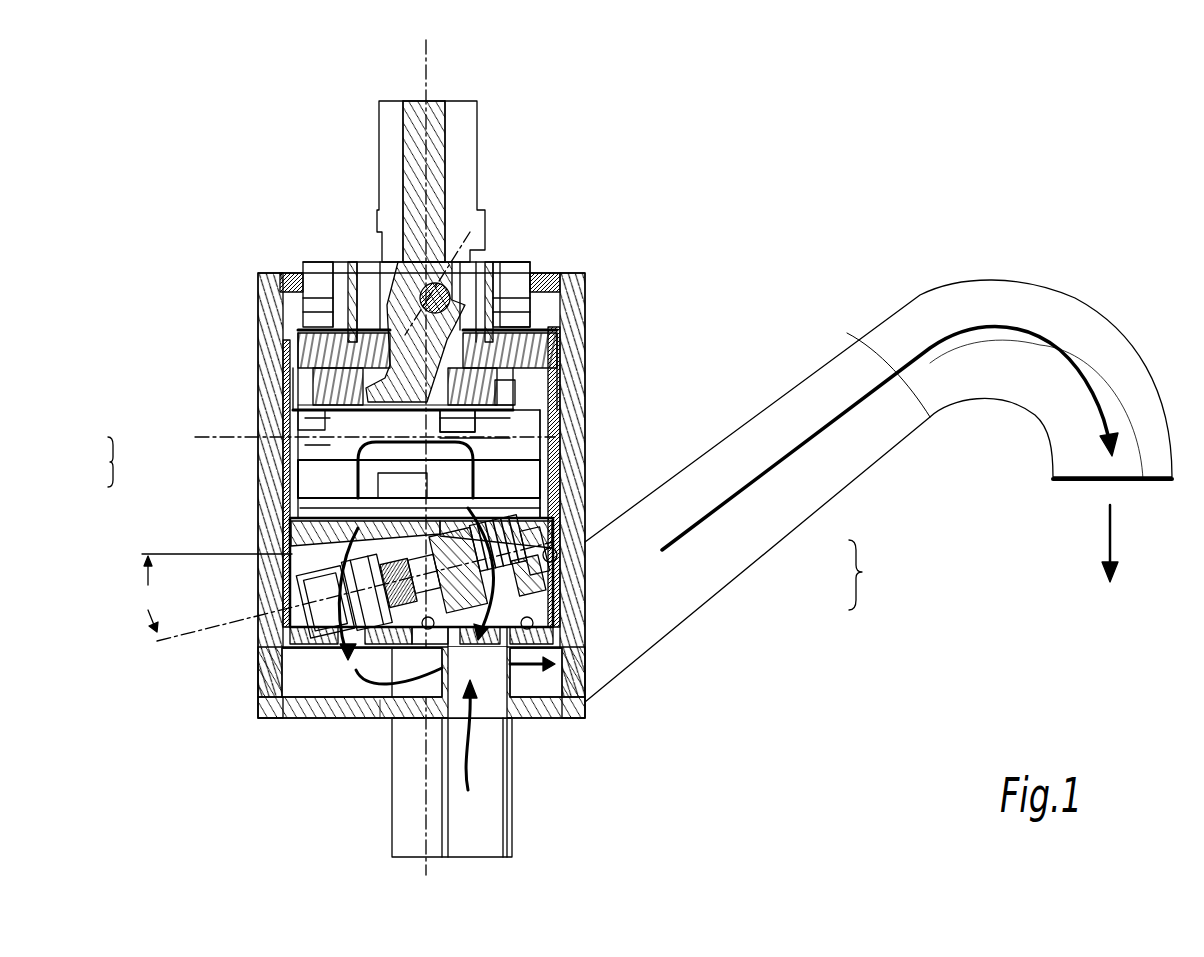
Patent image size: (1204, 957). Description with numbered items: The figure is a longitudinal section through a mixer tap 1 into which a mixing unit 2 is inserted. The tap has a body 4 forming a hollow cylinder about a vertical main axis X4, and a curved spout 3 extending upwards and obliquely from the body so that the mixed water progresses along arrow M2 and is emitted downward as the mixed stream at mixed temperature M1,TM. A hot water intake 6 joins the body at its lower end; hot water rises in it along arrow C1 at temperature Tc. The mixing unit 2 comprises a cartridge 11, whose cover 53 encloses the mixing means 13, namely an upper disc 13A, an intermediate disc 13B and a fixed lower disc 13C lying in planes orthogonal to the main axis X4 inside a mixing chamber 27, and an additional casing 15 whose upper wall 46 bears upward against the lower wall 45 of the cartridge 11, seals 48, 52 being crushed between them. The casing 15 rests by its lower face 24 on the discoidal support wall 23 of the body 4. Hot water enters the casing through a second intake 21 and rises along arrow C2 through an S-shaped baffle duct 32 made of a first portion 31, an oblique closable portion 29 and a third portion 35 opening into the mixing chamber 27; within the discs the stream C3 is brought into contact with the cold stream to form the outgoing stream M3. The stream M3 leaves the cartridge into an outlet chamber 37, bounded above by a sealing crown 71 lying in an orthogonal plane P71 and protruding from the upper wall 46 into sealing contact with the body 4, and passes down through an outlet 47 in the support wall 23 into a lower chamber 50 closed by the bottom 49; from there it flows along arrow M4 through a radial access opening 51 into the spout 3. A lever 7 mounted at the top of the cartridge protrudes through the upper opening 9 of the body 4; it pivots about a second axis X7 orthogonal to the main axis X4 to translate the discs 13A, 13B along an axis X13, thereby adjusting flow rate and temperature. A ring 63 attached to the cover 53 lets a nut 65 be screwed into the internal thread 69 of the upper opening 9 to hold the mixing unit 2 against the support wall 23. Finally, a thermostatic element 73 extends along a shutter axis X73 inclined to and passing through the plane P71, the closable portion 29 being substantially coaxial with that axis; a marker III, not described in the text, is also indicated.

The mixer tap 1 is at (703, 188).
The mixing unit 2 is at (104, 462).
The spout 3 is at (960, 300).
The body 4 is at (283, 370).
The hot water intake 6 is at (500, 828).
The lever 7 is at (395, 113).
The upper opening 9 is at (537, 272).
The cartridge 11 is at (303, 378).
The mixing means 13 is at (703, 243).
The upper disc 13A is at (522, 377).
The intermediate disc 13B is at (550, 423).
The lower disc 13C is at (490, 427).
The additional casing 15 is at (287, 523).
The second intake 21 is at (460, 655).
The support wall 23 is at (283, 705).
The lower face 24 is at (595, 688).
The mixing chamber 27 is at (500, 390).
The closable portion 29 is at (545, 585).
The first portion 31 is at (548, 640).
The baffle duct 32 is at (866, 575).
The third portion 35 is at (528, 540).
The outlet chamber 37 is at (300, 600).
The lower wall 45 is at (590, 497).
The upper wall 46 is at (583, 553).
The outlet 47 is at (380, 718).
The seal 48 is at (540, 482).
The bottom 49 is at (545, 720).
The lower chamber 50 is at (333, 700).
The access opening 51 is at (574, 719).
The seal 52 is at (298, 478).
The cover 53 is at (300, 318).
The ring 63 is at (523, 327).
The nut 65 is at (540, 272).
The internal thread 69 is at (291, 273).
The sealing crown 71 is at (292, 542).
The thermostatic element 73 is at (335, 628).
The main axis X4 is at (442, 451).
The second axis X7 is at (439, 281).
The axis X13 is at (357, 435).
The shutter axis X73 is at (332, 605).
The orthogonal plane P71 is at (215, 542).
The section III is at (292, 575).
The second incoming stream C1 is at (467, 747).
The second incoming stream C2 is at (452, 483).
The incoming stream C3 is at (343, 483).
The mixed stream of water and its temperature M1,TM is at (1139, 545).
The outgoing stream M2 is at (1090, 448).
The outgoing stream M3 is at (384, 606).
The outgoing stream M4 is at (511, 602).
The hot water temperature Tc is at (475, 842).